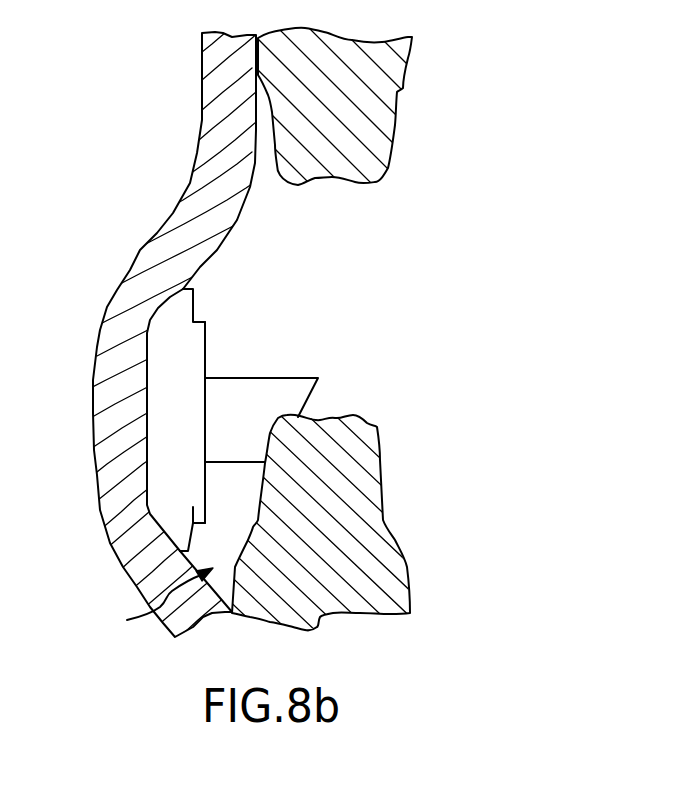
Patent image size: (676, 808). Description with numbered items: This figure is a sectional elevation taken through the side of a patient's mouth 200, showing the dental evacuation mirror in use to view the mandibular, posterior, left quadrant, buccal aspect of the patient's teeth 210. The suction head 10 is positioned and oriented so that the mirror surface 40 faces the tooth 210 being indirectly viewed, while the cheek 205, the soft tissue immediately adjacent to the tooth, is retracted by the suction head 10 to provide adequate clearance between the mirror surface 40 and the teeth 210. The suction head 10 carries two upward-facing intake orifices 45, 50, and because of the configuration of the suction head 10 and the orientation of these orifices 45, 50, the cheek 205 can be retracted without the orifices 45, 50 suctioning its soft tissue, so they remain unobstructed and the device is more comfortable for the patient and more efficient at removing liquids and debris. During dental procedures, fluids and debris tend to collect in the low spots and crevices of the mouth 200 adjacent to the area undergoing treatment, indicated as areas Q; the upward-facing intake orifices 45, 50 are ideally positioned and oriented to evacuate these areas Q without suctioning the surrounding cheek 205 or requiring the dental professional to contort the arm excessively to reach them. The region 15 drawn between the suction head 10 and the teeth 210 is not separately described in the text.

The cheek 205 is at (110, 362).
The teeth 210 is at (383, 142).
The patient's mouth 200 is at (429, 309).
The suction head 10 is at (187, 410).
The groove 15 is at (253, 426).
The mirror surface 40 is at (207, 353).
The upward-facing intake orifice 45 is at (195, 524).
The upward-facing intake orifice 50 is at (192, 302).
The areas Q is at (160, 603).